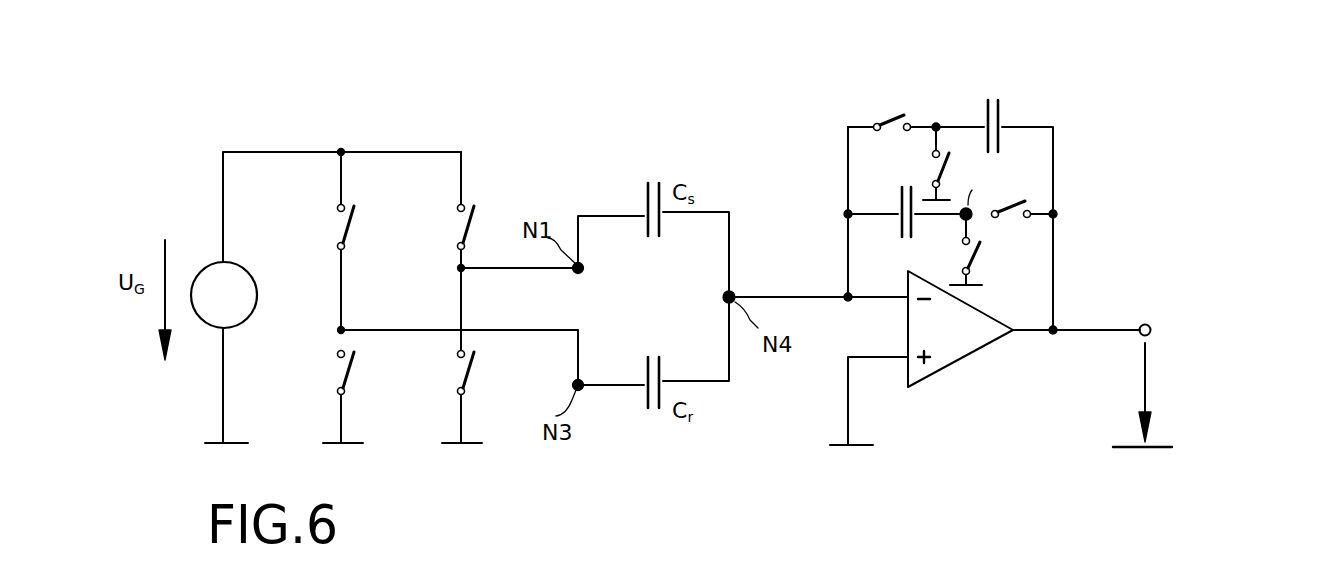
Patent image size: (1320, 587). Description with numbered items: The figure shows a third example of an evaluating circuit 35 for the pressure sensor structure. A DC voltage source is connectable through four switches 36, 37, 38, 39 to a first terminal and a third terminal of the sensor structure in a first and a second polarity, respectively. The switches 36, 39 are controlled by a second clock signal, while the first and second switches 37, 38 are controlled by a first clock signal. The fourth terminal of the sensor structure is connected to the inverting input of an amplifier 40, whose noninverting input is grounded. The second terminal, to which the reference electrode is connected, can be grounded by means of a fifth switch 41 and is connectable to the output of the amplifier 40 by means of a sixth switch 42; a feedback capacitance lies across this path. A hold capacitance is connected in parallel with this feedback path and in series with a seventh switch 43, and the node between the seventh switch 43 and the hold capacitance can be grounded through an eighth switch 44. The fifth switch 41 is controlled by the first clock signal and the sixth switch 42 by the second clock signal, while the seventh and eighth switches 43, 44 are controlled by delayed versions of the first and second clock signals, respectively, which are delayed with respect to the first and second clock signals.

The evaluating circuit 35 is at (1143, 162).
The switch 36 is at (350, 213).
The first switch 37 is at (350, 375).
The second switch 38 is at (470, 213).
The switch 39 is at (470, 375).
The amplifier 40 is at (983, 352).
The fifth switch 41 is at (982, 253).
The sixth switch 42 is at (1013, 198).
The seventh switch 43 is at (897, 118).
The eighth switch 44 is at (944, 165).